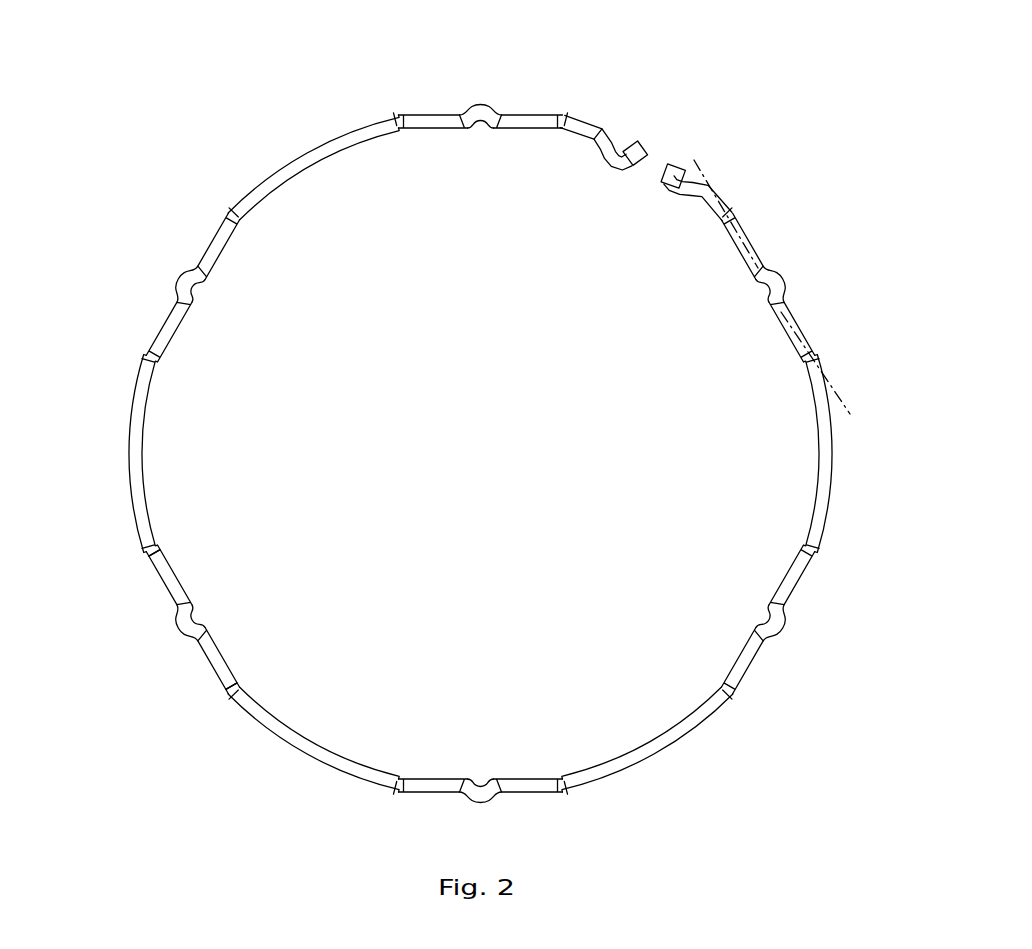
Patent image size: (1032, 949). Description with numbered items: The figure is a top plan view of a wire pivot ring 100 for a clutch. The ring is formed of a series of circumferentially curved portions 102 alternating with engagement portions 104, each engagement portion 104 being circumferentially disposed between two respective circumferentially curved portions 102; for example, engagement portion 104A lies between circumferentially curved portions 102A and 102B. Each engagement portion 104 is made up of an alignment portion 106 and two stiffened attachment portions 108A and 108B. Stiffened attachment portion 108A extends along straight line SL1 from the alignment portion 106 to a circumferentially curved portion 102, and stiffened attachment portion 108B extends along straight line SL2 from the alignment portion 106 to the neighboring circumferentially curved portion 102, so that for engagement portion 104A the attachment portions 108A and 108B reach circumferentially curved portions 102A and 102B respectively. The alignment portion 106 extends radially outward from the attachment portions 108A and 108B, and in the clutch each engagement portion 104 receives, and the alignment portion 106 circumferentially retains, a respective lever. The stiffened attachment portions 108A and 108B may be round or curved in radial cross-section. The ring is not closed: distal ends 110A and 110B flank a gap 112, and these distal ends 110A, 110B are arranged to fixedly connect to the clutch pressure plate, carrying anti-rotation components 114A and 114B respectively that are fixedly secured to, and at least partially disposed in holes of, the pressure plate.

The wire pivot ring 100 is at (212, 66).
The circumferentially curved portions 102 is at (839, 471).
The circumferentially curved portion 102A is at (273, 735).
The circumferentially curved portion 102B is at (137, 471).
The engagement portions 104 is at (479, 416).
The engagement portion 104A is at (157, 623).
The alignment portion 106 is at (492, 104).
The stiffened attachment portion 108A is at (440, 110).
The stiffened attachment portion 108B is at (534, 110).
The distal end 110A is at (622, 177).
The distal end 110B is at (660, 198).
The gap 112 is at (661, 160).
The anti-rotation component 114A is at (641, 143).
The anti-rotation component 114B is at (679, 165).
The straight line SL1 is at (744, 259).
The straight line SL2 is at (796, 348).